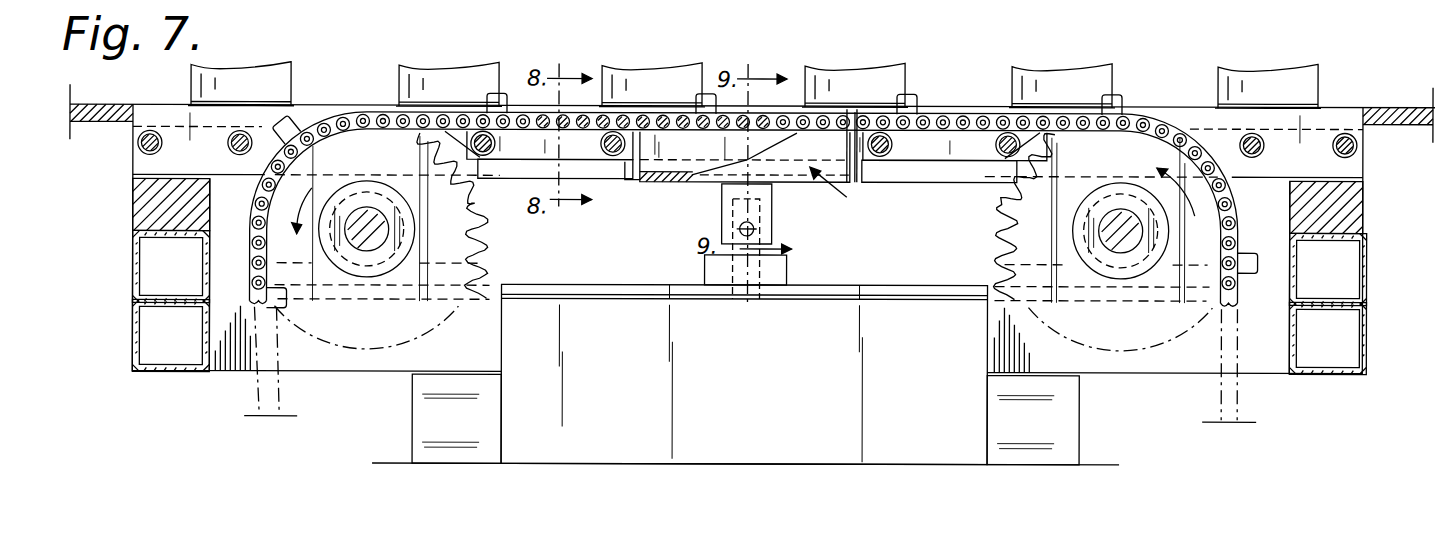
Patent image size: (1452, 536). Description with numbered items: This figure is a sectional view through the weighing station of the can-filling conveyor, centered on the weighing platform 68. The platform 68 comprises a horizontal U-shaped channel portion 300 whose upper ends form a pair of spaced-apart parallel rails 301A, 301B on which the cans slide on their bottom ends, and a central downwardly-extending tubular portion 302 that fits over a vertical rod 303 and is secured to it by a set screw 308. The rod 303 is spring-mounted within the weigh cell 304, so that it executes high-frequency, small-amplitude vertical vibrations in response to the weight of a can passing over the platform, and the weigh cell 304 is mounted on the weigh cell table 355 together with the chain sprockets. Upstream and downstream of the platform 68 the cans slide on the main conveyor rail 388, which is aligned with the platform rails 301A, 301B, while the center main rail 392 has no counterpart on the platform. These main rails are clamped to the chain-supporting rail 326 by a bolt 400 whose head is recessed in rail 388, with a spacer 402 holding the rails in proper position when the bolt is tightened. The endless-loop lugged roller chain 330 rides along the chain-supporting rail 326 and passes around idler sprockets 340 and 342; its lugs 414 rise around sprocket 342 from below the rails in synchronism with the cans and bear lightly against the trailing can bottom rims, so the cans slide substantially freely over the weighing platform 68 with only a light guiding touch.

The main conveyor rail 388 is at (153, 106).
The spacer 402 is at (140, 134).
The bolt 400 is at (170, 140).
The lug 414 is at (292, 124).
The endless-loop lugged roller chain 330 is at (352, 129).
The chain-supporting rail 326 is at (523, 147).
The center main rail 392 is at (603, 168).
The idler sprocket 340 is at (490, 236).
The idler sprocket 342 is at (1003, 215).
The U-shaped channel portion 300 is at (668, 180).
The weighing platform rail 301A is at (795, 108).
The weighing platform rail 301B is at (821, 110).
The weighing platform 68 is at (830, 191).
The tubular portion 302 is at (723, 205).
The set screw 308 is at (756, 226).
The vertical rod 303 is at (740, 247).
The weigh cell 304 is at (838, 369).
The weigh cell table 355 is at (430, 393).